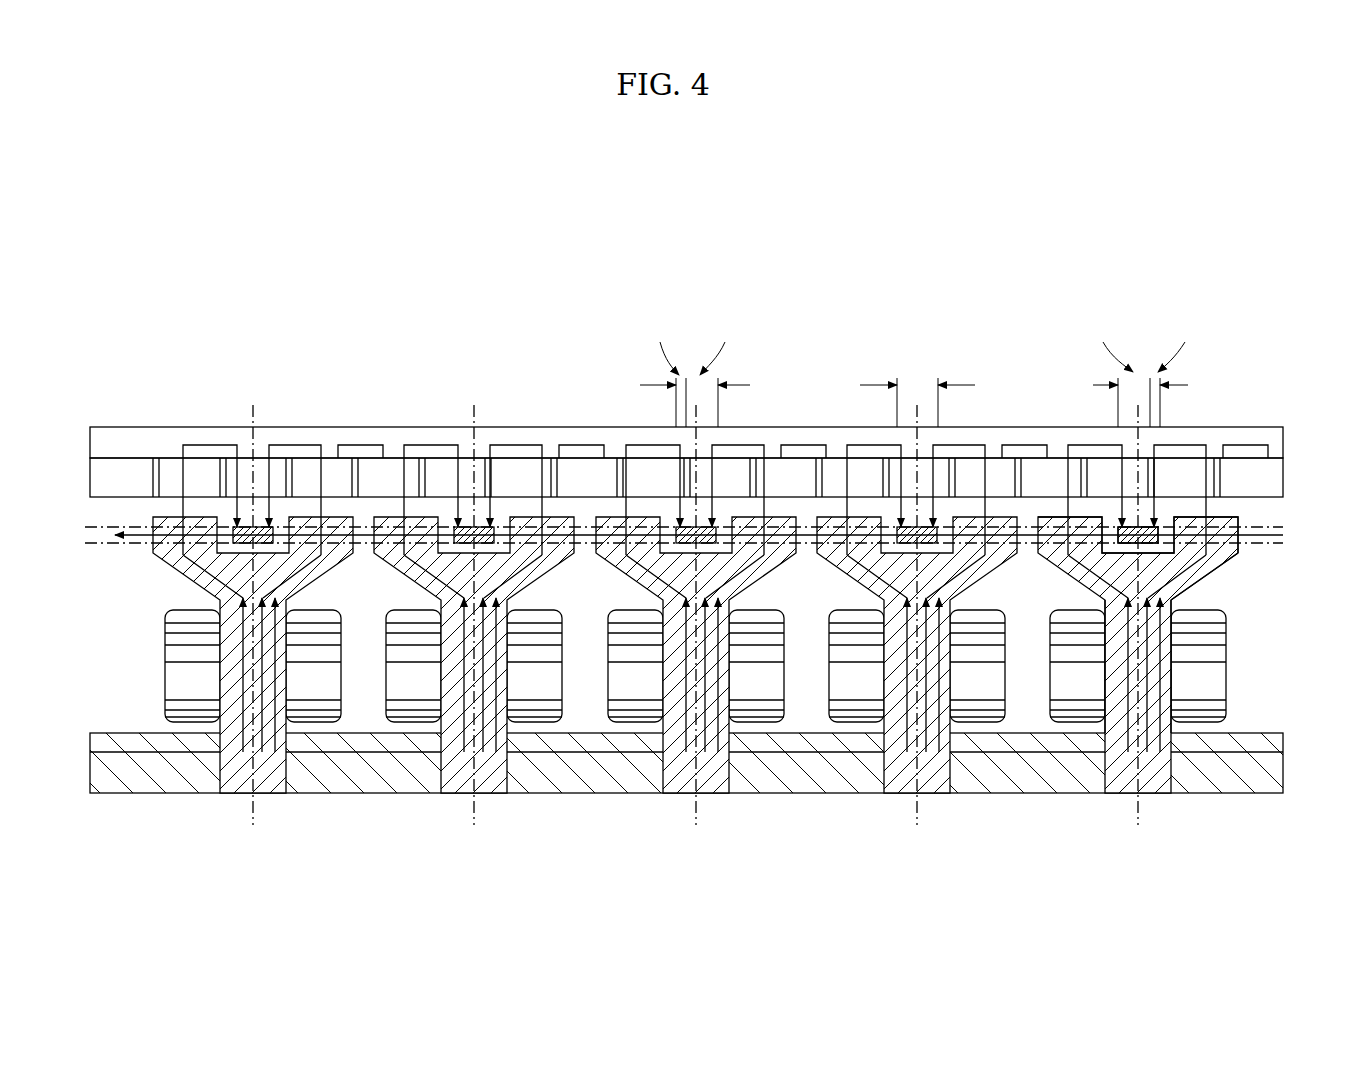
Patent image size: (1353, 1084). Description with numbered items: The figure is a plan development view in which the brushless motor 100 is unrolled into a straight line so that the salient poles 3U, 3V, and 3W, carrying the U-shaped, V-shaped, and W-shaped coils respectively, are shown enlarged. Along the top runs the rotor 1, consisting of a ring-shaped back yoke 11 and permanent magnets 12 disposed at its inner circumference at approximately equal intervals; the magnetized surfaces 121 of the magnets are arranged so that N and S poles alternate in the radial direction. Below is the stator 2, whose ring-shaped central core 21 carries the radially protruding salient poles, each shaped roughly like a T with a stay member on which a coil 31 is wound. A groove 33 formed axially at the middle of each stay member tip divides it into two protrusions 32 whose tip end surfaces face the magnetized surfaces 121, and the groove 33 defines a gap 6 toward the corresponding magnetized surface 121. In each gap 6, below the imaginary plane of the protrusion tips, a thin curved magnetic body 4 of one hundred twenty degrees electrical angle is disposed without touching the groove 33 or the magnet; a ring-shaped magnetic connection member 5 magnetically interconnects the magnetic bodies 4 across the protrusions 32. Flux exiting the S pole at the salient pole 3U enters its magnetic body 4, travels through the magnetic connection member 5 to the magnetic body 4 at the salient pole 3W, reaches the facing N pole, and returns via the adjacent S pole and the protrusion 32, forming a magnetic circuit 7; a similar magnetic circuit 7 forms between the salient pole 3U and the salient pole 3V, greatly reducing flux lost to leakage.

The brushless motor 100 is at (729, 258).
The rotor 1 is at (527, 365).
The back yoke 11 is at (585, 427).
The permanent magnets 12 is at (443, 427).
The magnetized surfaces 121 is at (418, 427).
The stator 2 is at (588, 882).
The central core 21 is at (562, 793).
The salient pole 3U is at (225, 812).
The salient pole 3V is at (668, 812).
The salient pole 3W is at (445, 812).
The coil 31 is at (1236, 672).
The protrusions 32 is at (1072, 517).
The groove 33 is at (1090, 548).
The magnetic body 4 is at (1130, 543).
The magnetic connection member 5 is at (1260, 522).
The gap 6 is at (1165, 575).
The magnetic circuit 7 is at (200, 427).